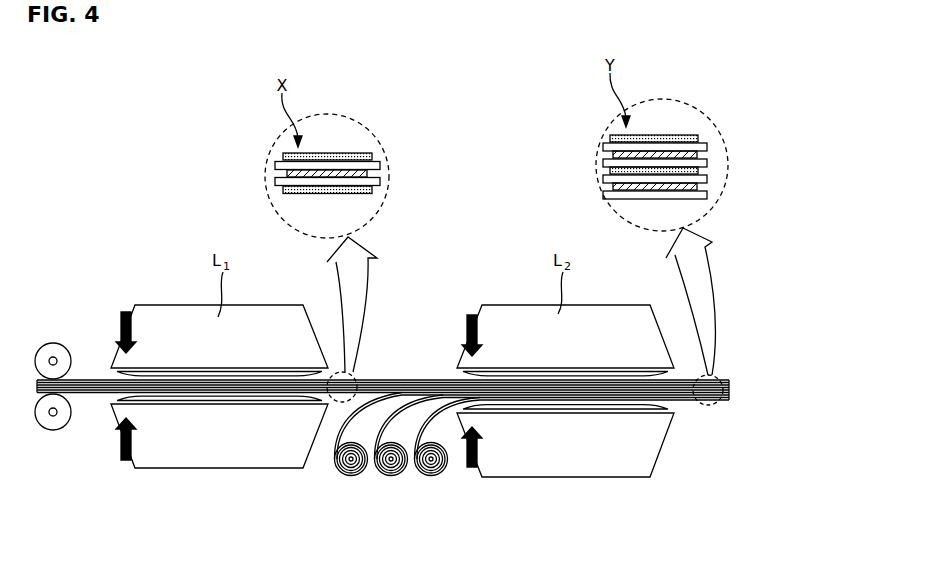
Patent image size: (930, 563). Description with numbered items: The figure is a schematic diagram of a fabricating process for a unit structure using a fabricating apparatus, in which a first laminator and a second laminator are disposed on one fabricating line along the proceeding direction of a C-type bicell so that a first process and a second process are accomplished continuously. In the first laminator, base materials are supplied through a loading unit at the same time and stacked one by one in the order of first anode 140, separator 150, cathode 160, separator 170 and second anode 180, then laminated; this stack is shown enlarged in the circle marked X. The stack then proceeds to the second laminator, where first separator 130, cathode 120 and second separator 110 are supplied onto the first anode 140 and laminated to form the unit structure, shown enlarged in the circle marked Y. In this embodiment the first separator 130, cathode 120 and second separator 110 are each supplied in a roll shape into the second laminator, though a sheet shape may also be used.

The second separator 110 is at (603, 194).
The cathode 120 is at (613, 186).
The first separator 130 is at (603, 178).
The first anode 140 is at (283, 190).
The separator 150 is at (275, 181).
The cathode 160 is at (287, 174).
The separator 170 is at (275, 166).
The second anode 180 is at (283, 156).